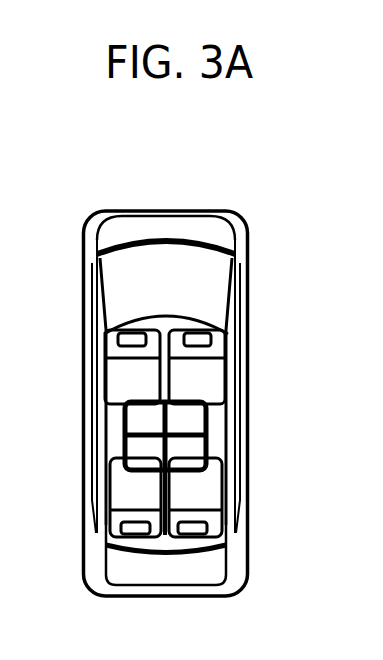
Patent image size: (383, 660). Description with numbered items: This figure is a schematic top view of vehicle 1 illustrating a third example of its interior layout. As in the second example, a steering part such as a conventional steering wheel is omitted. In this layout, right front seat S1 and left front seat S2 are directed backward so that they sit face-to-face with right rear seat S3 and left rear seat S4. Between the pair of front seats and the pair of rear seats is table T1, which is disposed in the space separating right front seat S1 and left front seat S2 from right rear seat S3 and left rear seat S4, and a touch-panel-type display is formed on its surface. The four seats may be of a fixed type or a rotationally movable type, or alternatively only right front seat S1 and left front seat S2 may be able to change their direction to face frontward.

The vehicle 1 is at (163, 209).
The right front seat S1 is at (201, 370).
The left front seat S2 is at (130, 371).
The right rear seat S3 is at (200, 480).
The left rear seat S4 is at (130, 480).
The table T1 is at (137, 445).